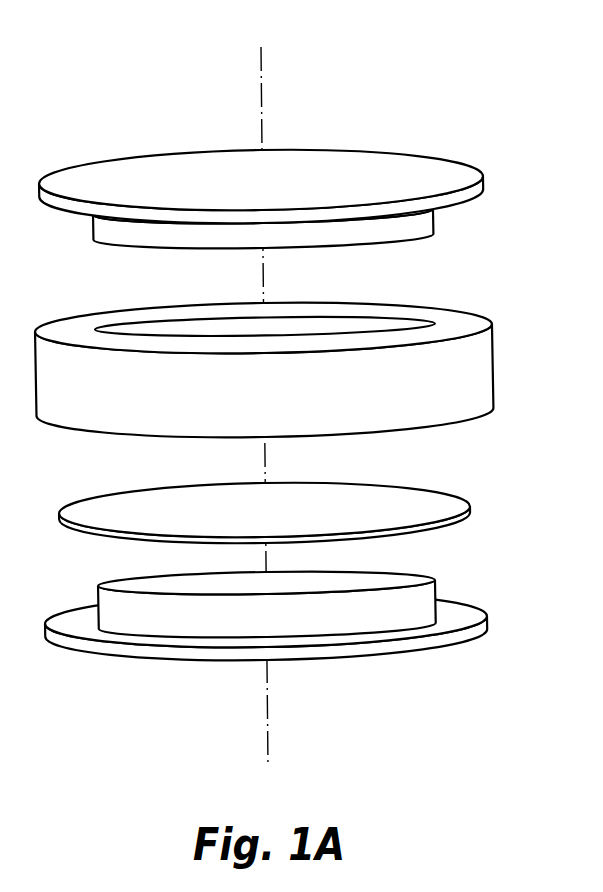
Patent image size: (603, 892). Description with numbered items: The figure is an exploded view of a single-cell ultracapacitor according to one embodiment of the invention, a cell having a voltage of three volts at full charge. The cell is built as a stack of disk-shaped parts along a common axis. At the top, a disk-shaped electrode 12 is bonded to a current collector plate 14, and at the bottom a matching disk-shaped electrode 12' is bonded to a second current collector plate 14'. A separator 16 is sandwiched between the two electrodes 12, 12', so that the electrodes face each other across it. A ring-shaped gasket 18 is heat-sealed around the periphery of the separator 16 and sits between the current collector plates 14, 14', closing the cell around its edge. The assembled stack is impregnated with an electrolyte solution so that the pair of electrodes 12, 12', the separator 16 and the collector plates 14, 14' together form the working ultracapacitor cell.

The current collector plate 14 is at (296, 182).
The disk shaped electrode 12 is at (323, 224).
The gasket 18 is at (492, 360).
The separator 16 is at (445, 492).
The disk shaped electrode 12' is at (319, 599).
The current collector plate 14' is at (293, 633).